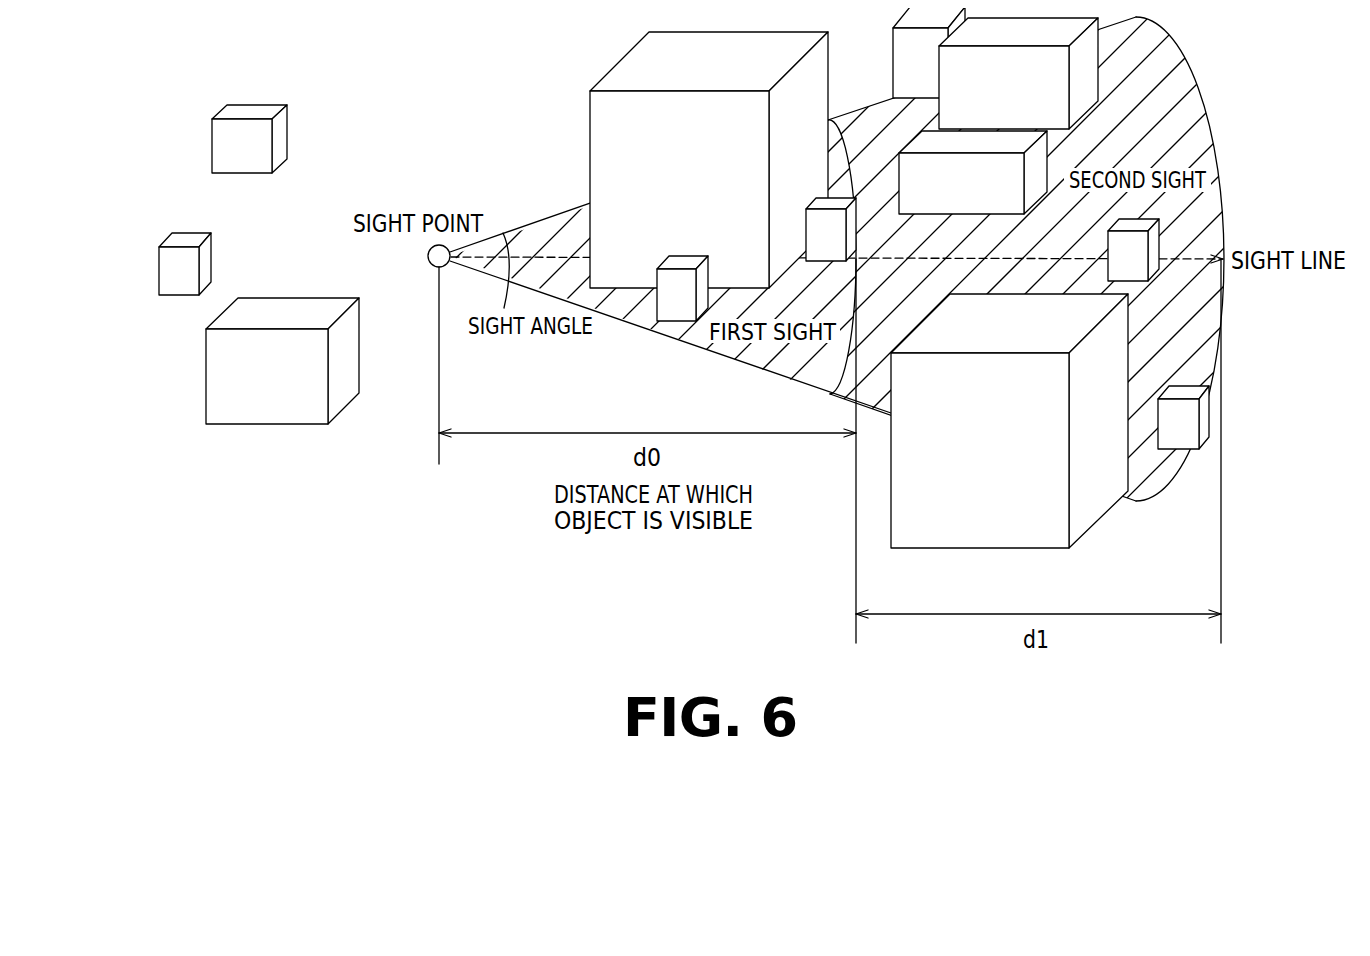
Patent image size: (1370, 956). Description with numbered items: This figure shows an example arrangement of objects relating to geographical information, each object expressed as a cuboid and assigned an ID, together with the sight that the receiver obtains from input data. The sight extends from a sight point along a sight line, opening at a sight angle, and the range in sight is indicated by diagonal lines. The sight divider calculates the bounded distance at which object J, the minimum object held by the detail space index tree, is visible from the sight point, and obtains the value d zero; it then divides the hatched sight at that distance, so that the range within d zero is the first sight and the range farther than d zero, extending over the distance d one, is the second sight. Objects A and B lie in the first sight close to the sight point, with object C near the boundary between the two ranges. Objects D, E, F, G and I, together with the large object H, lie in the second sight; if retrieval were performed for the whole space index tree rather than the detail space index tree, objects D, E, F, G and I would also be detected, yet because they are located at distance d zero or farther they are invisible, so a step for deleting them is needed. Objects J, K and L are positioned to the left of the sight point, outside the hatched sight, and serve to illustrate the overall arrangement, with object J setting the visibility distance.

The object A is at (709, 160).
The object B is at (682, 288).
The object C is at (831, 229).
The object D is at (929, 53).
The object E is at (1018, 73).
The object F is at (973, 172).
The object G is at (1133, 250).
The object H is at (1009, 421).
The object I is at (1183, 417).
The object J is at (249, 139).
The object K is at (282, 361).
The object L is at (185, 264).